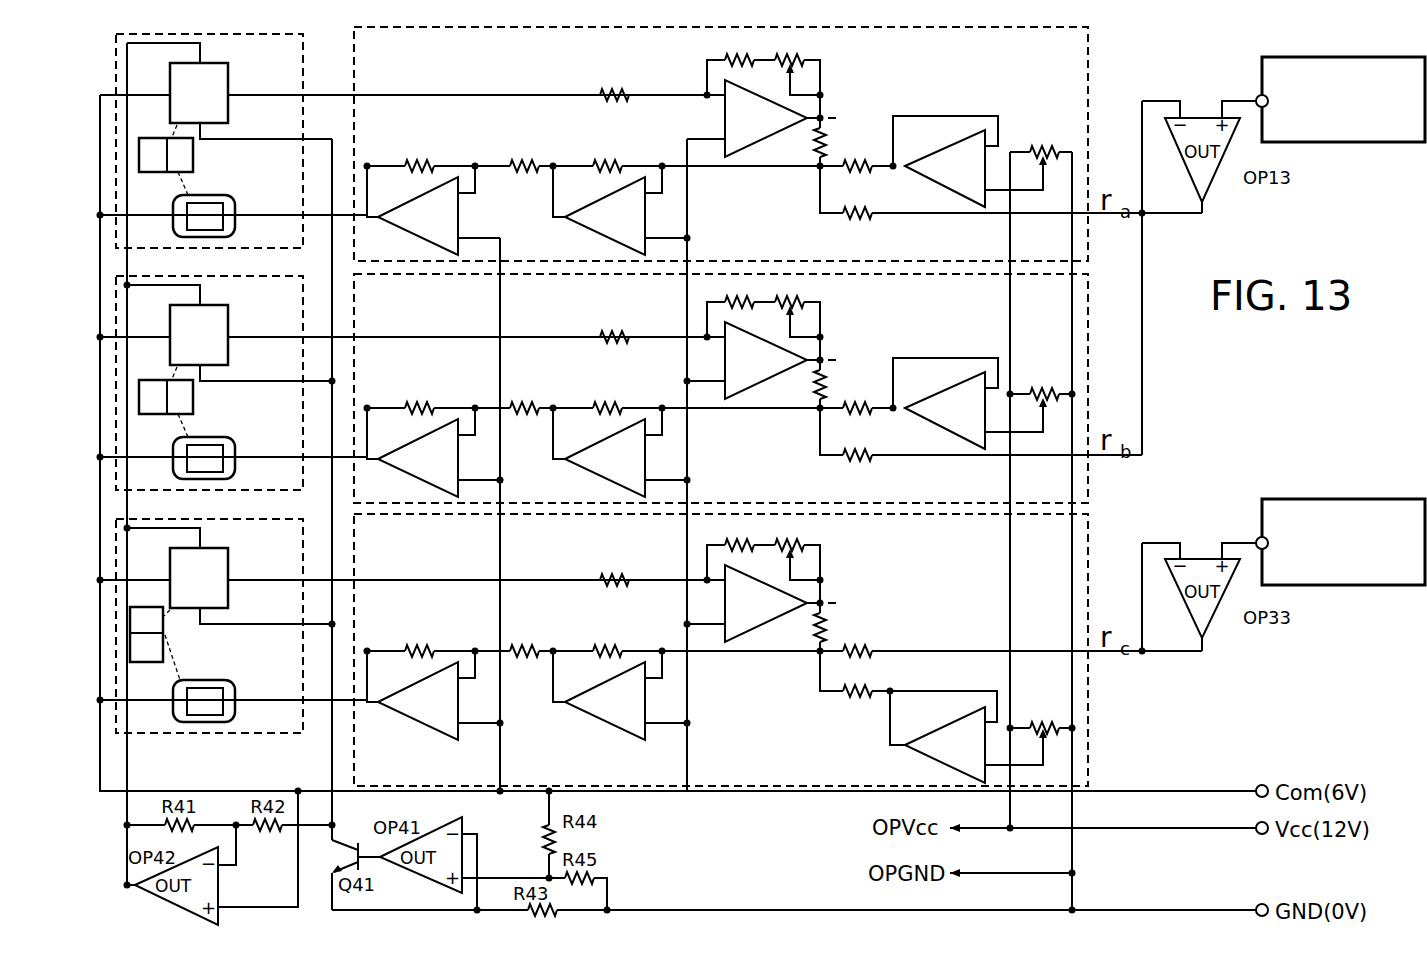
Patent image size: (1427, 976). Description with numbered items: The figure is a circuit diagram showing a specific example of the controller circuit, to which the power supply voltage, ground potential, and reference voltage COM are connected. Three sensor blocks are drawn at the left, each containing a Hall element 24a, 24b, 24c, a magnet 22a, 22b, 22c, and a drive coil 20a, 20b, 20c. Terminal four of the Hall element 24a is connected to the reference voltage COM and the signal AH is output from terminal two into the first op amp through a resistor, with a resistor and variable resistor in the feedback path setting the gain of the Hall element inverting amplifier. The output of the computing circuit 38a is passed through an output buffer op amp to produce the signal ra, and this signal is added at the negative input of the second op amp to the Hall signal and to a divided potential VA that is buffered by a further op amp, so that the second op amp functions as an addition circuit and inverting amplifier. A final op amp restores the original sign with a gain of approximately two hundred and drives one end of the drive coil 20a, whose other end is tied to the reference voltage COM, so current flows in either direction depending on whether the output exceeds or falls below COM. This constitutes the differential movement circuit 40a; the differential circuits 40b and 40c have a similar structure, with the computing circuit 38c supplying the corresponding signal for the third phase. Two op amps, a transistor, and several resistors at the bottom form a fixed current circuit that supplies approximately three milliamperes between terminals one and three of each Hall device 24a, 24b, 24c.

The drive coil 20a is at (205, 197).
The drive coil 20b is at (232, 446).
The drive coil 20c is at (232, 689).
The magnet (N/S) of phase A 22a is at (193, 155).
The magnet (N/S) of phase B 22b is at (193, 396).
The magnet (N/S) of phase C 22c is at (177, 644).
The Hall element 24a is at (207, 68).
The Hall element 24b is at (411, 383).
The Hall element 24c is at (411, 626).
The computing circuit 38a is at (1280, 57).
The computing circuit 38c is at (1280, 499).
The differential movement circuit 40a is at (508, 27).
The differential circuit 40b is at (748, 387).
The differential circuit 40c is at (778, 649).